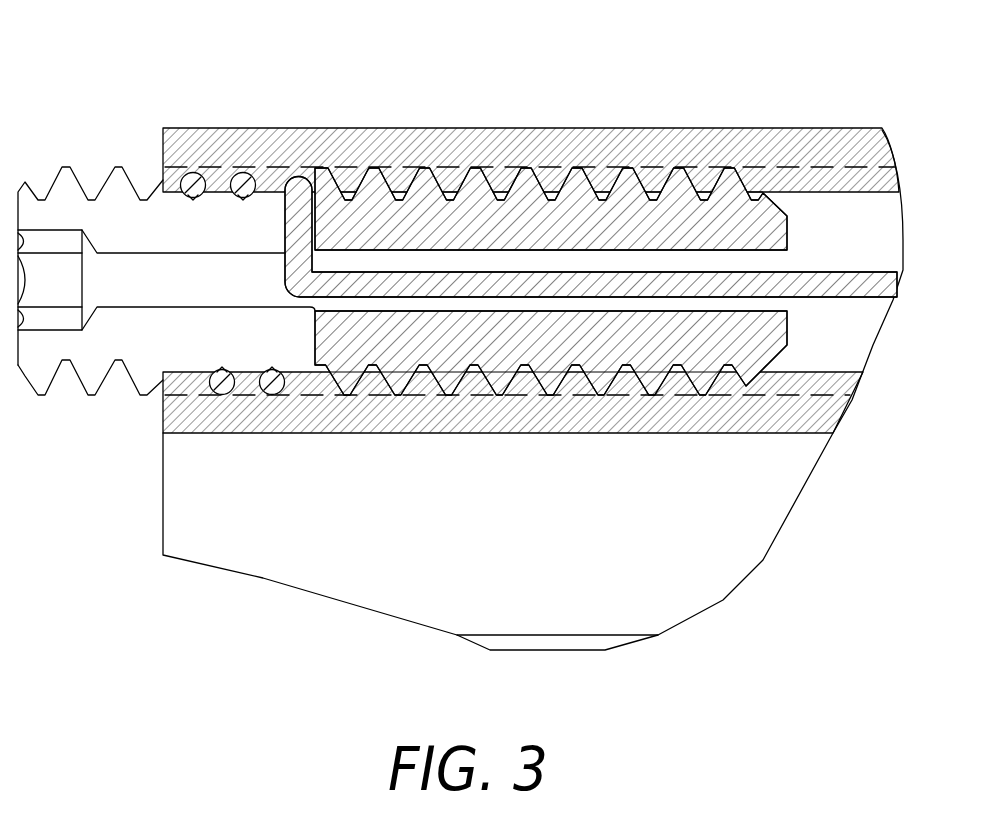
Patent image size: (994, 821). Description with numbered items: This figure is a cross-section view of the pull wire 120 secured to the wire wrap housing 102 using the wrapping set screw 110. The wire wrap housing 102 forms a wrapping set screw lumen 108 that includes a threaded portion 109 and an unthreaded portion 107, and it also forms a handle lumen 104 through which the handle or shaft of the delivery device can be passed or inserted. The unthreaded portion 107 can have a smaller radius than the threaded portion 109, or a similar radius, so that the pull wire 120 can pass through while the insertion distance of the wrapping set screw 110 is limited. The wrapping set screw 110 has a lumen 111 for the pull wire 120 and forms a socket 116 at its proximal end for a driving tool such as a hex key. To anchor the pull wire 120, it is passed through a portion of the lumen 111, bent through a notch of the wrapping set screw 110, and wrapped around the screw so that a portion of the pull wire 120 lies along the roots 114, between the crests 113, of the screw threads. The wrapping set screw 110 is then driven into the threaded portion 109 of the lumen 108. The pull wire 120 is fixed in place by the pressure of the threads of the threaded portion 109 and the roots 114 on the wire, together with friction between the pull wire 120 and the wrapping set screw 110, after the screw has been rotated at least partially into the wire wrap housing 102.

The wire wrap housing 102 is at (502, 128).
The handle lumen 104 is at (368, 565).
The unthreaded portion 107 is at (797, 200).
The wrapping set screw lumen 108 is at (857, 238).
The threaded portion 109 is at (652, 173).
The wrapping set screw 110 is at (115, 200).
The lumen 111 is at (138, 293).
The crests 113 is at (374, 170).
The roots 114 is at (348, 200).
The socket 116 is at (45, 237).
The pull wire 120 is at (222, 395).